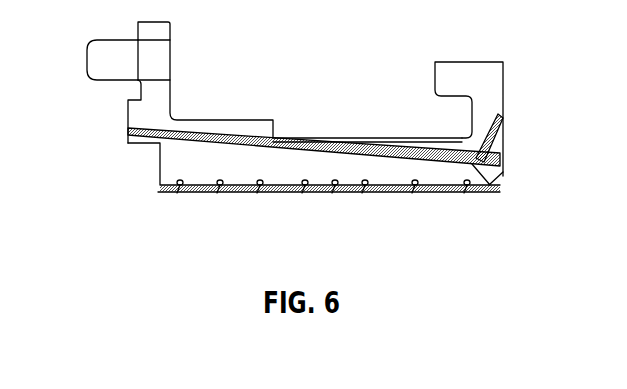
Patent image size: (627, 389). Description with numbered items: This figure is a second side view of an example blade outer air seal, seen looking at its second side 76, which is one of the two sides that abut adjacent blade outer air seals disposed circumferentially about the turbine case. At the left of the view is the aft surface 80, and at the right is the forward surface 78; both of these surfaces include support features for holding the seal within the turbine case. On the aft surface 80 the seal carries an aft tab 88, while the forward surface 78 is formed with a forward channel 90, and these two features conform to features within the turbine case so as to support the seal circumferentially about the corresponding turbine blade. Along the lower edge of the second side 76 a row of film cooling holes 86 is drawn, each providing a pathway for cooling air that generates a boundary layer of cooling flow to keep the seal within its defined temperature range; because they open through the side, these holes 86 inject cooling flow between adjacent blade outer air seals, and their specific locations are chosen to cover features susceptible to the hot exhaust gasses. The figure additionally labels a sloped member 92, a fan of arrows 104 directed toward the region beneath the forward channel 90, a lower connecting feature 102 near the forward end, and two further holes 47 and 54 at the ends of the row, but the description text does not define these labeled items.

The aft tab 88 is at (85, 63).
The aft surface 80 is at (125, 119).
The second side 76 is at (162, 172).
The seal member 92 is at (309, 131).
The gaps 104 is at (418, 132).
The forward channel 90 is at (468, 116).
The forward surface 78 is at (509, 127).
The connecting portion 102 is at (493, 186).
The hole 47 is at (180, 190).
The film cooling holes 86 is at (260, 190).
The hole 54 is at (467, 190).